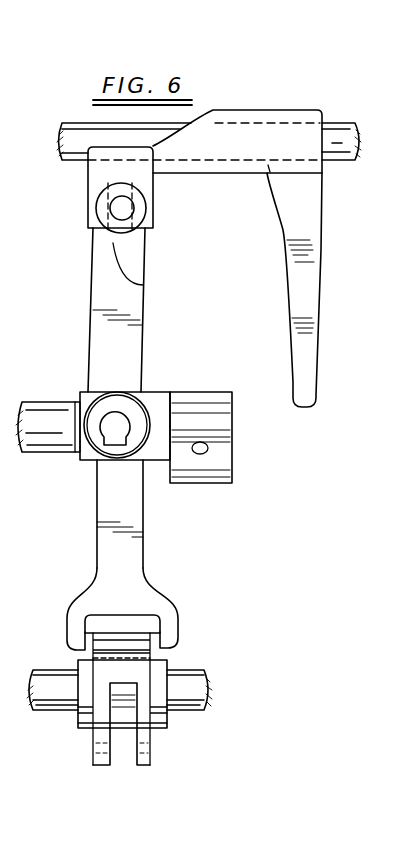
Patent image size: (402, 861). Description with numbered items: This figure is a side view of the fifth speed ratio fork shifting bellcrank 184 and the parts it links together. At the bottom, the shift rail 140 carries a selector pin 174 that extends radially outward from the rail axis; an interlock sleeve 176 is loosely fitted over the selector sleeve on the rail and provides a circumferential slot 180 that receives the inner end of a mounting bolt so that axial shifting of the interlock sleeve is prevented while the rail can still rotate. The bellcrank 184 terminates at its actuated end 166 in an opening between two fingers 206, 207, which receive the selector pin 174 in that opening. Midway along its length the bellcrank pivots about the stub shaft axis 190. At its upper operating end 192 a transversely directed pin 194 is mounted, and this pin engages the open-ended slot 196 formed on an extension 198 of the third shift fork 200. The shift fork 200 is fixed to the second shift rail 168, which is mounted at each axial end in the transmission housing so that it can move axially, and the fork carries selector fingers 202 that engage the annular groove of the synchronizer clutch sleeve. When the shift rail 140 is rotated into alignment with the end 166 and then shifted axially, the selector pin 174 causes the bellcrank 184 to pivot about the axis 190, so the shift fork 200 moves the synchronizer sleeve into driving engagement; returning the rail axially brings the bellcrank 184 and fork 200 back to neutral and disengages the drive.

The shift rail 140 is at (197, 710).
The bellcrank end 166 is at (135, 513).
The second shift rail 168 is at (343, 128).
The selector pin 174 is at (132, 633).
The interlock sleeve 176 is at (100, 713).
The circumferential slot 180 is at (133, 763).
The bellcrank 184 is at (98, 345).
The stub shaft axis 190 is at (112, 423).
The operating end 192 is at (143, 285).
The transversely directed pin 194 is at (129, 217).
The open-ended slot 196 is at (101, 193).
The extension 198 is at (173, 188).
The third shift fork 200 is at (255, 117).
The selector fingers 202 is at (298, 348).
The finger 206 is at (175, 622).
The finger 207 is at (72, 625).